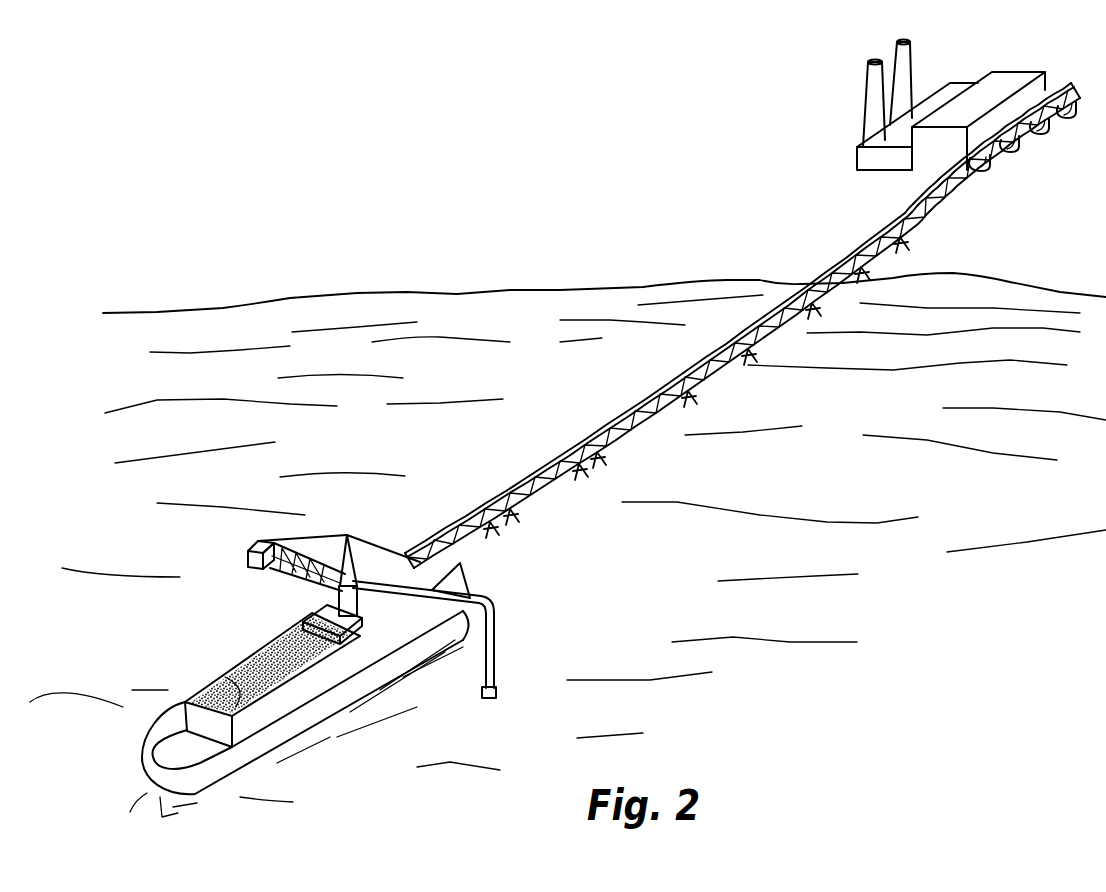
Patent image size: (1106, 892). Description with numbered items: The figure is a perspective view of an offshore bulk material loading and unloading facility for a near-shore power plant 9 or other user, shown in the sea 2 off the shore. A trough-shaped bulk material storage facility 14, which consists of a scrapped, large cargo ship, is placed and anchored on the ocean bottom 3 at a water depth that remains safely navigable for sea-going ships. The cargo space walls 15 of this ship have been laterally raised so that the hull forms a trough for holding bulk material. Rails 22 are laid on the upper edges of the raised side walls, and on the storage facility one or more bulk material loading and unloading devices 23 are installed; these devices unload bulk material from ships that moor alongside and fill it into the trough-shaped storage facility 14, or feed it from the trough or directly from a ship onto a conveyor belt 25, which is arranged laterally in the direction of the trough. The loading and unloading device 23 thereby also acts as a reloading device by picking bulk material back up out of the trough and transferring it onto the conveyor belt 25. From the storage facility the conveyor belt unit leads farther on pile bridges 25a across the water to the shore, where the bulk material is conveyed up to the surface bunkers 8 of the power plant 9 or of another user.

The sea / body of water 2 is at (760, 476).
The ocean bottom 3 is at (358, 789).
The surface bunkers 8 is at (1018, 133).
The power plant 9 is at (1010, 80).
The bulk material storage facility 14 is at (242, 695).
The cargo space walls 15 is at (263, 662).
The rails 22 is at (277, 644).
The bulk material loading and unloading device 23 is at (497, 641).
The conveyor belt 25 is at (627, 406).
The pile bridges 25a is at (548, 490).